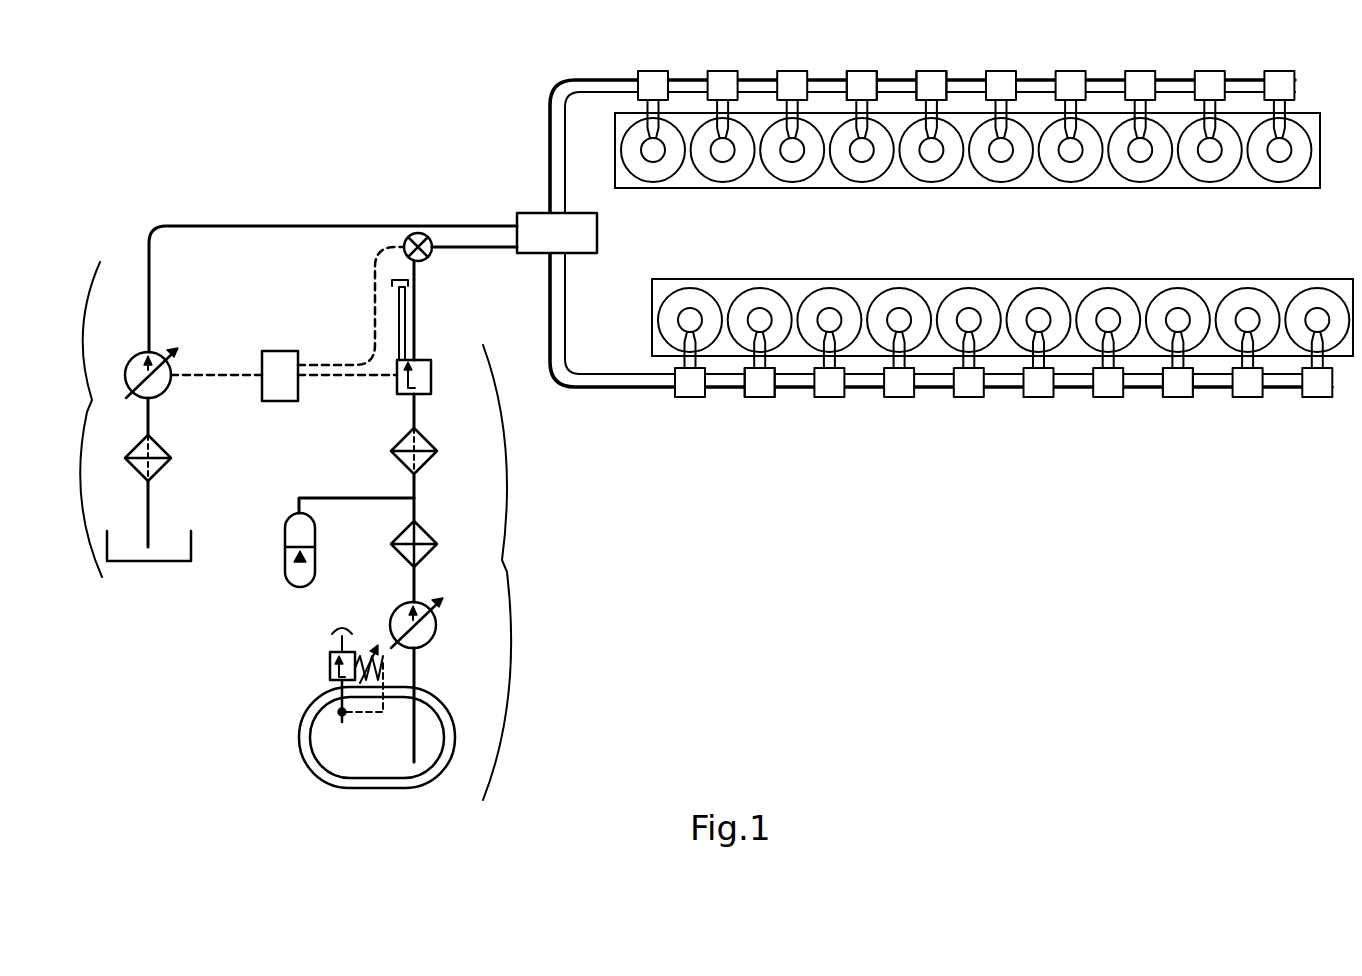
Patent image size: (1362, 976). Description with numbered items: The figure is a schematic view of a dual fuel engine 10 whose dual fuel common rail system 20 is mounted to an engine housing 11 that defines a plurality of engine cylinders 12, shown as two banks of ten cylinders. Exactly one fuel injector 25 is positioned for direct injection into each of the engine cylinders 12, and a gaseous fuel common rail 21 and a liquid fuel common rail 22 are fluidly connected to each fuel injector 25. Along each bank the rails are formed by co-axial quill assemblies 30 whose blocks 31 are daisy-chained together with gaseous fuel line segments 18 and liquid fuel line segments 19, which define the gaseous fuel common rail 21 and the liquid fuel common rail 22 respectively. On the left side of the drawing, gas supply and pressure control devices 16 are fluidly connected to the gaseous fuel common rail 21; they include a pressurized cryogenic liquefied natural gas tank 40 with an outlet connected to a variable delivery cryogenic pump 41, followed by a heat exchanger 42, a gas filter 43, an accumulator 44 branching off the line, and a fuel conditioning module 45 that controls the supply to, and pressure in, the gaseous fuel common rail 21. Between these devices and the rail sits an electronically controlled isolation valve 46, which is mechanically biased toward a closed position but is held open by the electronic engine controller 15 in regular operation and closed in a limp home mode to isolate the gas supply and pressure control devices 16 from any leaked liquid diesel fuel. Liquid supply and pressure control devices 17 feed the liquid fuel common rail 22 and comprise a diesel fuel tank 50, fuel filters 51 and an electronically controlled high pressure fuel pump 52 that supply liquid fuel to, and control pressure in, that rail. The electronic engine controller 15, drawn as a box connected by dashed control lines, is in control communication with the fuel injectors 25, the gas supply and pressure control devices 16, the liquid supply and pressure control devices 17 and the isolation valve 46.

The dual fuel engine 10 is at (979, 249).
The engine housing 11 is at (695, 190).
The engine cylinders 12 is at (776, 172).
The electronic engine controller 15 is at (280, 351).
The gas supply and pressure control devices 16 is at (511, 572).
The liquid supply and pressure control devices 17 is at (81, 419).
The gaseous fuel line segments 18 is at (1033, 100).
The liquid fuel line segments 19 is at (1108, 82).
The dual fuel common rail system 20 is at (970, 48).
The gaseous fuel common rail 21 is at (826, 88).
The liquid fuel common rail 22 is at (1036, 80).
The fuel injector 25 is at (870, 168).
The co-axial quill assembly 30 is at (930, 70).
The blocks 31 is at (791, 71).
The pressurized cryogenic liquefied natural gas tank 40 is at (456, 735).
The variable delivery cryogenic pump 41 is at (436, 638).
The heat exchanger 42 is at (437, 538).
The gas filter 43 is at (437, 444).
The accumulator 44 is at (316, 545).
The fuel conditioning module 45 is at (431, 368).
The electronically controlled isolation valve 46 is at (432, 250).
The diesel fuel tank 50 is at (192, 532).
The fuel filters 51 is at (171, 453).
The electronically controlled high pressure fuel pump 52 is at (171, 378).